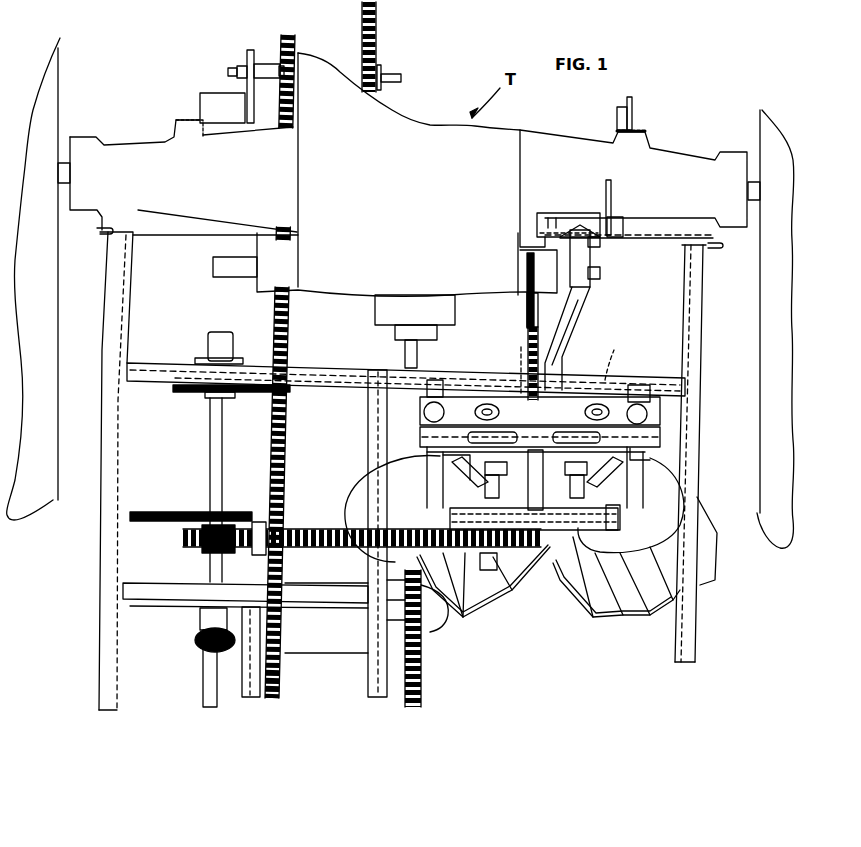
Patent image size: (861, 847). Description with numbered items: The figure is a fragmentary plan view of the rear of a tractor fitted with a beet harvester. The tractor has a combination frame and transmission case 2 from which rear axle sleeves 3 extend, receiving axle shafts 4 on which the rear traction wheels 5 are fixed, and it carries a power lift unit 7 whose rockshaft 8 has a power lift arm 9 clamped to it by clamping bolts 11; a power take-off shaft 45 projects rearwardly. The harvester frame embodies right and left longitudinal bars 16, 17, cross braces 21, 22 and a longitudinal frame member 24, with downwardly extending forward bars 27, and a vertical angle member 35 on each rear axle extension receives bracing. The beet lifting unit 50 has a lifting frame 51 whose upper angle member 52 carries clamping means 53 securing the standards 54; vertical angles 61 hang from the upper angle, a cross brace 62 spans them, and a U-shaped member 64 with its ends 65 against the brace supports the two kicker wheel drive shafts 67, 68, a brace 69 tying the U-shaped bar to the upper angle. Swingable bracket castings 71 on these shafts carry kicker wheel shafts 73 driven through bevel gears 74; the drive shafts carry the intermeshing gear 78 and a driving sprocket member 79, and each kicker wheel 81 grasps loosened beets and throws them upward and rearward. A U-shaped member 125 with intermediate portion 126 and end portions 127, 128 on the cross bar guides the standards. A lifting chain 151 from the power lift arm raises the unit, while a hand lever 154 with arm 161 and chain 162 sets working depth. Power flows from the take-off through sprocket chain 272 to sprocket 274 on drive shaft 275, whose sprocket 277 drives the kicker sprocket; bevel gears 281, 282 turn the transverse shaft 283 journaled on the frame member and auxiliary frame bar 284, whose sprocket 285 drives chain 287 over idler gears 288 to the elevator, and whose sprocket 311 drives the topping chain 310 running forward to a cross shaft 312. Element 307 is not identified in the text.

The frame and transmission case 2 is at (498, 172).
The rear axle sleeves 3 is at (145, 153).
The axle shafts 4 is at (63, 162).
The rear traction wheels 5 is at (58, 88).
The power lift unit 7 is at (352, 298).
The rockshaft 8 is at (230, 272).
The power lift arm 9 is at (583, 312).
The clamping bolts 11 is at (580, 208).
The right hand longitudinal bar 16 is at (698, 363).
The left hand longitudinal bar 17 is at (107, 496).
The cross brace 21 is at (150, 370).
The cross brace 22 is at (178, 584).
The longitudinal frame member 24 is at (378, 448).
The downwardly extending bars 27 is at (102, 234).
The vertical angle member 35 is at (200, 106).
The power take-off shaft 45 is at (404, 356).
The beet lifting unit 50 is at (575, 400).
The lifting frame 51 is at (517, 402).
The upper angle member 52 is at (557, 430).
The clamping means 53 is at (456, 398).
The standards 54 is at (437, 382).
The vertical angles 61 is at (418, 440).
The cross brace 62 is at (643, 448).
The U-shaped member 64 is at (458, 499).
The ends of U-shaped member 65 is at (434, 468).
The kicker wheel drive shaft 67 is at (497, 492).
The kicker wheel drive shaft 68 is at (576, 493).
The brace 69 is at (536, 478).
The journal-supporting bracket castings 71 is at (460, 518).
The kicker wheel shaft 73 is at (455, 492).
The bevel gears 74 is at (474, 412).
The gear 78 is at (622, 524).
The driving sprocket member 79 is at (498, 561).
The kicker wheel 81 is at (480, 598).
The U-shaped member 125 is at (368, 406).
The intermediate portion 126 is at (560, 387).
The end portion 127 is at (418, 424).
The end portion 128 is at (650, 414).
The lifting chain 151 is at (545, 398).
The hand lever 154 is at (526, 278).
The arm 161 is at (527, 346).
The chain 162 is at (521, 385).
The sprocket chain 272 is at (248, 396).
The sprocket 274 is at (202, 394).
The drive shaft 275 is at (210, 494).
The sprocket 277 is at (186, 541).
The bevel gear 281 is at (197, 637).
The bevel gear 282 is at (216, 696).
The transverse shaft 283 is at (300, 655).
The auxiliary frame bar 284 is at (255, 699).
The sprocket 285 is at (422, 660).
The driving chain 287 is at (420, 702).
The idler gears 288 is at (426, 614).
The chain 307 is at (362, 20).
The sprocket chain 310 is at (286, 322).
The sprocket 311 is at (272, 692).
The cross shaft 312 is at (389, 75).